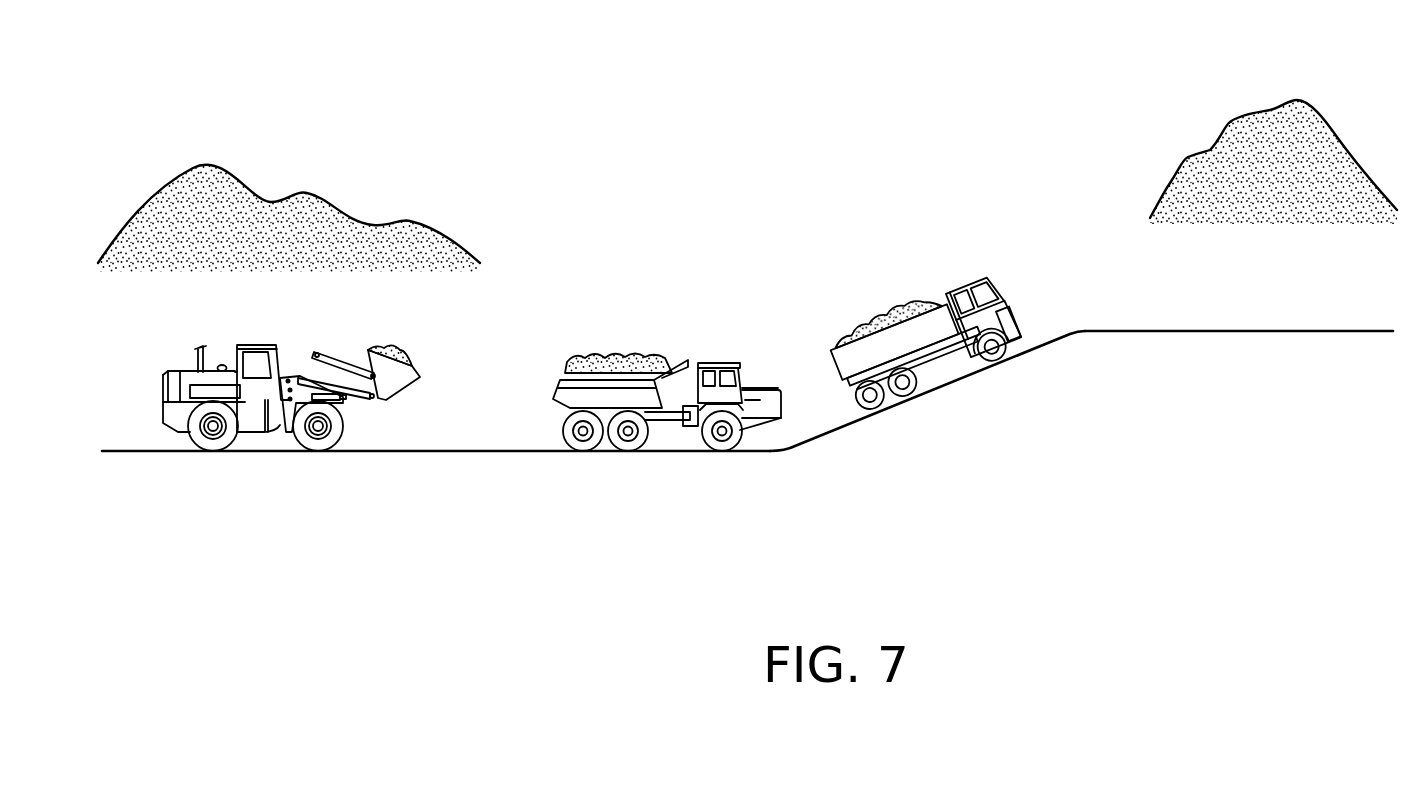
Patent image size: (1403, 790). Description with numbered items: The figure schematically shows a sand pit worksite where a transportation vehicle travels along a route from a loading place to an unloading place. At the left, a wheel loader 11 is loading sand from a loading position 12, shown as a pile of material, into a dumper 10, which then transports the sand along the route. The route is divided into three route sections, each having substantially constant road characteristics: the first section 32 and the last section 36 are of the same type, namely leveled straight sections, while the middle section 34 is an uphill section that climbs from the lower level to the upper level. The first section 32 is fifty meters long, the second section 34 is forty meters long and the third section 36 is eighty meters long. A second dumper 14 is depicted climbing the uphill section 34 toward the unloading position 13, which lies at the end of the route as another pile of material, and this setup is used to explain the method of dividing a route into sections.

The dumper 10 is at (710, 362).
The wheel loader 11 is at (282, 420).
The loading position 12 is at (320, 218).
The unloading position 13 is at (1212, 152).
The haul truck traveling up ramp 14 is at (948, 293).
The first section 32 is at (660, 452).
The second section 34 is at (957, 382).
The third section 36 is at (1255, 331).